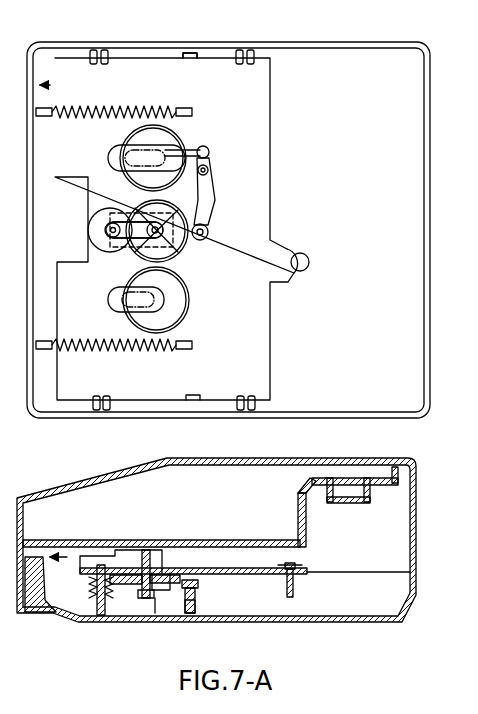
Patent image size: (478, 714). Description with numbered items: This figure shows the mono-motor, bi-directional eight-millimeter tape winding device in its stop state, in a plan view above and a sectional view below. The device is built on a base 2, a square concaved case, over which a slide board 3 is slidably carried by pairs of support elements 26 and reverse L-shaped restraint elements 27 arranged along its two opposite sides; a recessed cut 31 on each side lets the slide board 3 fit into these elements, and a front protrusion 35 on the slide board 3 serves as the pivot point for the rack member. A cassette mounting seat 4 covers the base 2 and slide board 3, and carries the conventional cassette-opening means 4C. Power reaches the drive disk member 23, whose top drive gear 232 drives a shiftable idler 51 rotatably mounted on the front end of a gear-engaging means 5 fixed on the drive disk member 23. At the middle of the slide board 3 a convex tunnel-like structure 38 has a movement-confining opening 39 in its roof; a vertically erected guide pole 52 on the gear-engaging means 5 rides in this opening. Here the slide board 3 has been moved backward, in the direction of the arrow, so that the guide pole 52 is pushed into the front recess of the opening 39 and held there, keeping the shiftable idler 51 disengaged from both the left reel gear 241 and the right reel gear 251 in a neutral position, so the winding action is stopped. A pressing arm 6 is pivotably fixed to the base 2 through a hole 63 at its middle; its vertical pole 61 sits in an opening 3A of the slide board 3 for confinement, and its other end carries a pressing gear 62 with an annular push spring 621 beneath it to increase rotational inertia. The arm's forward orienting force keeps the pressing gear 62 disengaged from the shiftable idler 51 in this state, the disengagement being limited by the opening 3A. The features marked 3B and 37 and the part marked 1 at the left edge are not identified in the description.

The housing 1 is at (17, 520).
The base 2 is at (375, 44).
The slide board 3 is at (275, 337).
The opening 3A is at (202, 146).
The frame slot 3B is at (106, 161).
The cassette mounting seat 4 is at (412, 524).
The cassette-opening means 4C is at (286, 522).
The gear-engaging means 5 is at (134, 257).
The pressing arm 6 is at (215, 212).
The drive disk member 23 is at (96, 233).
The support element 26 is at (93, 50).
The restraint element 27 is at (105, 50).
The recessed cut 31 is at (188, 52).
The front protrusion 35 is at (300, 275).
The spring 37 is at (138, 108).
The convex tunnel-like structure 38 is at (92, 217).
The movement-confining opening 39 is at (130, 212).
The shiftable idler 51 is at (185, 236).
The guide pole 52 is at (160, 238).
The vertical pole 61 is at (210, 153).
The pressing gear 62 is at (210, 236).
The hole 63 is at (210, 173).
The drive gear 232 is at (98, 596).
The gear of left reel 241 is at (124, 142).
The gear of right reel 251 is at (190, 306).
The annular push spring 621 is at (198, 602).